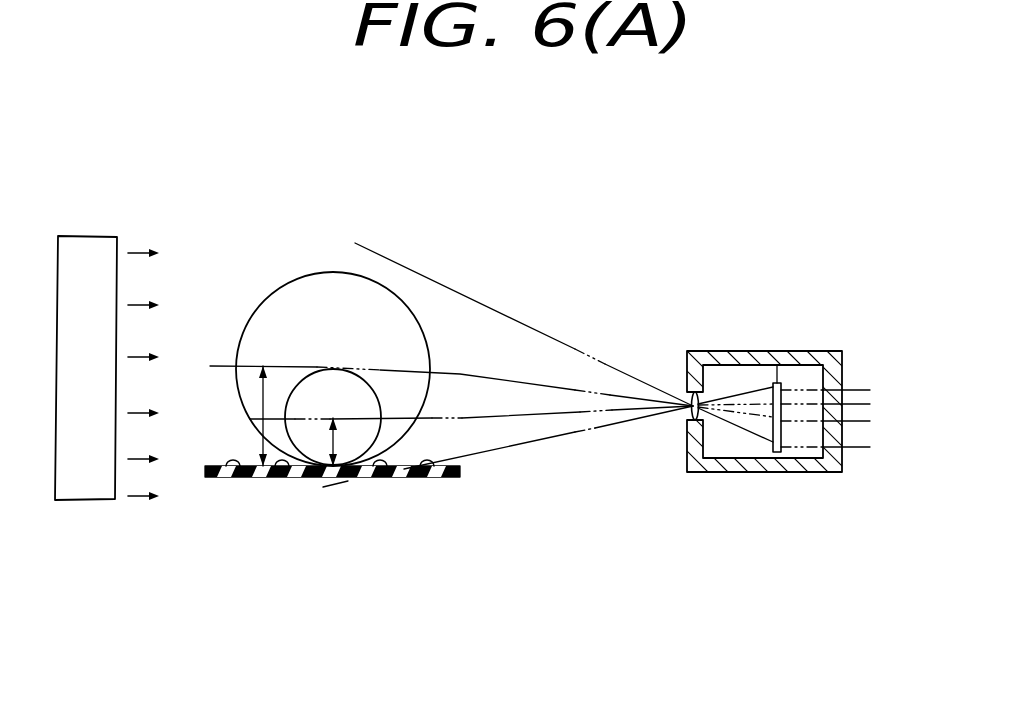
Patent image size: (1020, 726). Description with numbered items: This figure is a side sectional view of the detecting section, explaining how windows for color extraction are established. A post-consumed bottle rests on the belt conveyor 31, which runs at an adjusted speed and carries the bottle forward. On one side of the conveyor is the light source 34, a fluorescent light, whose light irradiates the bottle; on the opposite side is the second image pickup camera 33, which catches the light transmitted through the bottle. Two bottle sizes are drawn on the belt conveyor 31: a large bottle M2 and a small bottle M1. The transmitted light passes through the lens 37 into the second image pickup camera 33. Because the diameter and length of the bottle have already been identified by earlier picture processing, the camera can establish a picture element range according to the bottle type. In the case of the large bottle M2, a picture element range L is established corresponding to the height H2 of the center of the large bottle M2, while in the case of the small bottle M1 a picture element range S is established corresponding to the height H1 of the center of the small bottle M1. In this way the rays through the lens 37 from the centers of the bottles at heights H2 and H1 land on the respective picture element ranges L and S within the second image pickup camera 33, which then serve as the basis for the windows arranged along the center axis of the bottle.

The belt conveyor 31 is at (425, 478).
The second image pickup camera 33 is at (728, 350).
The light source 34 is at (93, 470).
The lens 37 is at (692, 412).
The small bottle M1 is at (362, 370).
The large bottle M2 is at (267, 295).
The height of the center of the small bottle H1 is at (333, 447).
The height of the center of the large bottle H2 is at (262, 397).
The picture element range L is at (866, 387).
The picture element range S is at (867, 435).